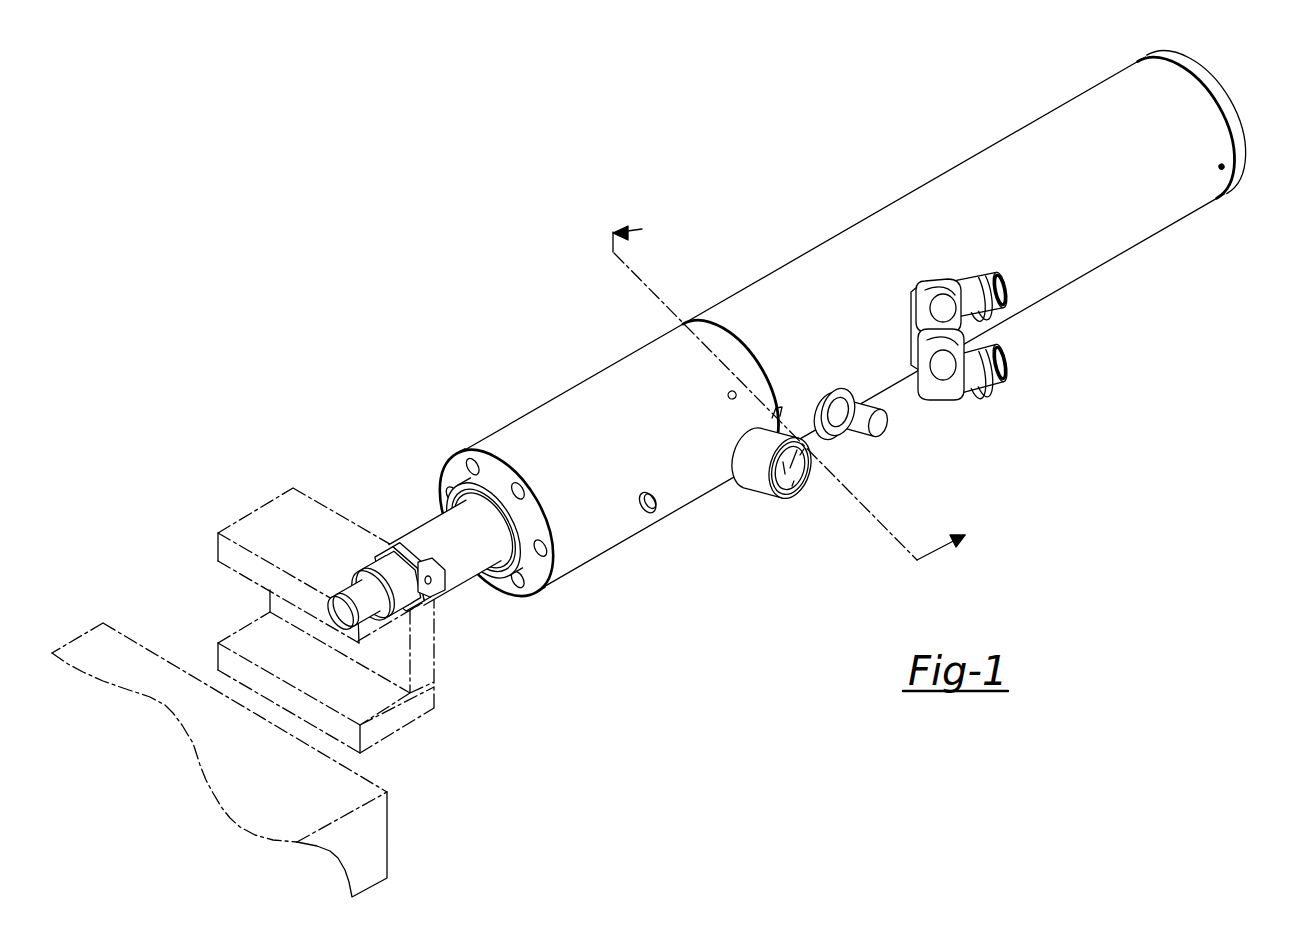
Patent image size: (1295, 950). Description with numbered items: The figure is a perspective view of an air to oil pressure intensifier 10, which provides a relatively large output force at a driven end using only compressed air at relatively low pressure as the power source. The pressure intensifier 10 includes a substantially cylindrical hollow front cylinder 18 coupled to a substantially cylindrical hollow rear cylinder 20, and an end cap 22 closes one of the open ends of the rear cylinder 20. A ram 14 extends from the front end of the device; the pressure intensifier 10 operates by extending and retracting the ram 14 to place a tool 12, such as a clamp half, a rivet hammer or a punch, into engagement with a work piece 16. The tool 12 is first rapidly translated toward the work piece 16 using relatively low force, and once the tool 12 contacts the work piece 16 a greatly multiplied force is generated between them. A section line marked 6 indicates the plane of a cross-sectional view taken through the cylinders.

The pressure intensifier 10 is at (792, 343).
The tool 12 is at (282, 507).
The ram 14 is at (457, 575).
The work piece 16 is at (395, 823).
The front cylinder 18 is at (548, 415).
The rear cylinder 20 is at (787, 273).
The end cap 22 is at (1158, 56).
The section line 6- 6 is at (798, 392).